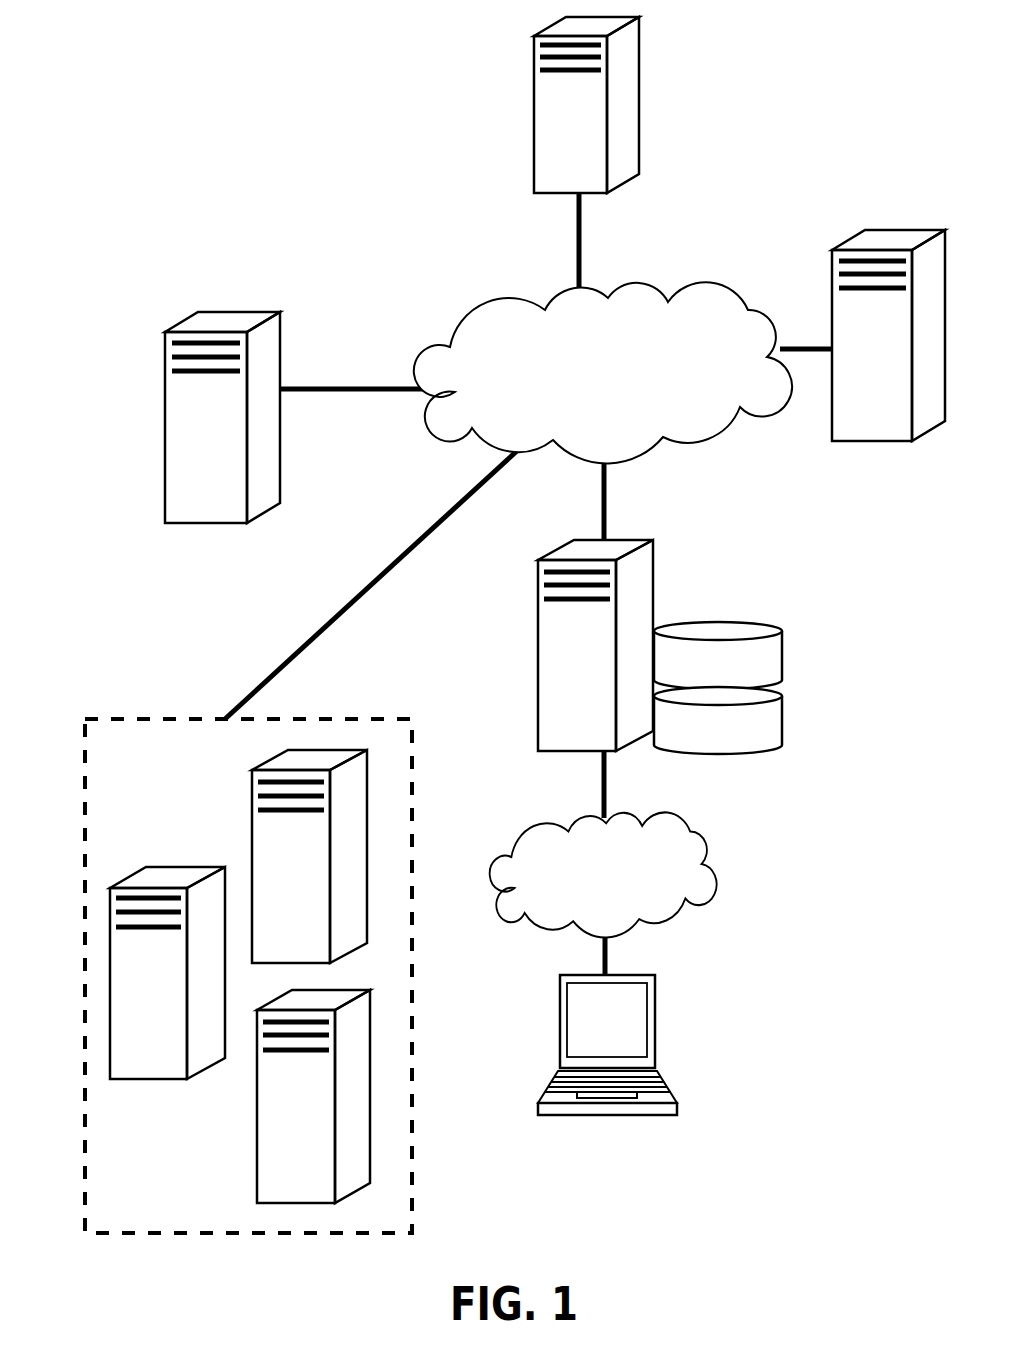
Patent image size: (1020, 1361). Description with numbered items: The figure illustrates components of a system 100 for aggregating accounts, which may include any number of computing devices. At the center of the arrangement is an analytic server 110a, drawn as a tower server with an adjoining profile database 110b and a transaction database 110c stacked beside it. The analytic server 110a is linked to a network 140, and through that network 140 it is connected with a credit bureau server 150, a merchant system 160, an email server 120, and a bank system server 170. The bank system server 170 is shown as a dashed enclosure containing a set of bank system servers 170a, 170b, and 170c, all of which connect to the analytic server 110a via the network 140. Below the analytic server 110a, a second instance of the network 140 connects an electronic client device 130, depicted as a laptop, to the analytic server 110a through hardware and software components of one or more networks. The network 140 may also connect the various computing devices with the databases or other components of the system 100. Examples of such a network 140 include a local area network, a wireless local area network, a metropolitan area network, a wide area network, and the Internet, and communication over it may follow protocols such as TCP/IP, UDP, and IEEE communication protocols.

The system 100 is at (110, 57).
The analytic server 110a is at (595, 645).
The profile database 110b is at (718, 655).
The transaction database 110c is at (718, 720).
The email server 120 is at (222, 417).
The electronic client device 130 is at (607, 1045).
The network 140 is at (603, 609).
The credit bureau server 150 is at (888, 335).
The merchant system 160 is at (586, 105).
The bank system server 170 is at (248, 976).
The bank system server 170a is at (167, 973).
The bank system server 170b is at (309, 856).
The bank system server 170c is at (313, 1096).